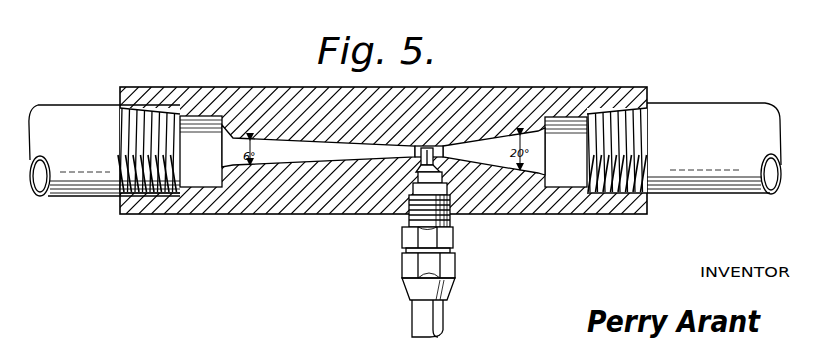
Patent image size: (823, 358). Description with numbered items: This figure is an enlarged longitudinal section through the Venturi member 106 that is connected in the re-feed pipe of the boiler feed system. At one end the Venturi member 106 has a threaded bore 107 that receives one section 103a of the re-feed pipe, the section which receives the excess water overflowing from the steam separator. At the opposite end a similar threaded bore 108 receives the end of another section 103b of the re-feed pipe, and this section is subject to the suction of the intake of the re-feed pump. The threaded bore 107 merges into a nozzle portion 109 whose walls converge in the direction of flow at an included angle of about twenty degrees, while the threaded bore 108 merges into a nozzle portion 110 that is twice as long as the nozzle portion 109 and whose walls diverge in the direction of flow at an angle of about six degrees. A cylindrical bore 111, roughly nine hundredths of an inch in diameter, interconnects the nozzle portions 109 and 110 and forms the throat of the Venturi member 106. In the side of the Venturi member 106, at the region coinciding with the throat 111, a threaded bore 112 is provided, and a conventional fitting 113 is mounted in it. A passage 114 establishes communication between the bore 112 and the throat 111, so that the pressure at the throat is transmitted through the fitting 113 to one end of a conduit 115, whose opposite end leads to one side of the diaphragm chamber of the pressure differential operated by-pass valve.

The re-feed pipe section 103a is at (761, 103).
The re-feed pipe section 103b is at (82, 93).
The Venturi member 106 is at (608, 84).
The threaded bore 107 is at (611, 198).
The threaded bore 108 is at (152, 112).
The nozzle portion 109 is at (538, 128).
The nozzle portion 110 is at (272, 163).
The cylindrical bore 111 is at (427, 146).
The threaded bore 112 is at (400, 212).
The fitting 113 is at (448, 237).
The passage 114 is at (443, 150).
The conduit 115 is at (443, 315).